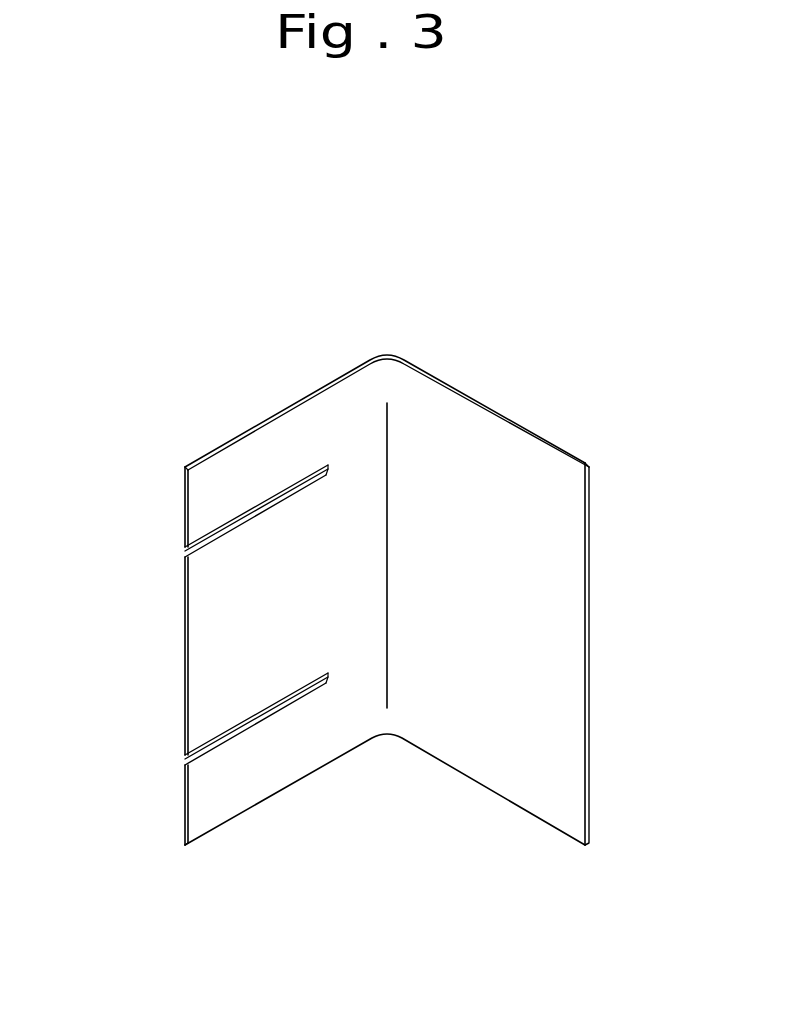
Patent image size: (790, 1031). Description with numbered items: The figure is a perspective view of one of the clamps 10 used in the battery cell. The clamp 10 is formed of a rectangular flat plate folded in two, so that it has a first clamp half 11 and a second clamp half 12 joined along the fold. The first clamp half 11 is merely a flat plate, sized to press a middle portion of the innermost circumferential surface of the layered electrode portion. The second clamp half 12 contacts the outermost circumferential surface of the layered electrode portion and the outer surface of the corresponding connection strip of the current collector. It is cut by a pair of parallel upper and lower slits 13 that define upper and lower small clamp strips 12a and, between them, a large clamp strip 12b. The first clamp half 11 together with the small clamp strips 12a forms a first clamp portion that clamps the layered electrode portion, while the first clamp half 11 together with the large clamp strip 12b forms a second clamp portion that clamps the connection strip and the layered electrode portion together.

The clamp 10 is at (391, 316).
The first clamp half 11 is at (532, 570).
The second clamp half 12 is at (245, 430).
The small clamp strips 12a is at (217, 490).
The large clamp strip 12b is at (217, 650).
The slits 13 is at (185, 553).